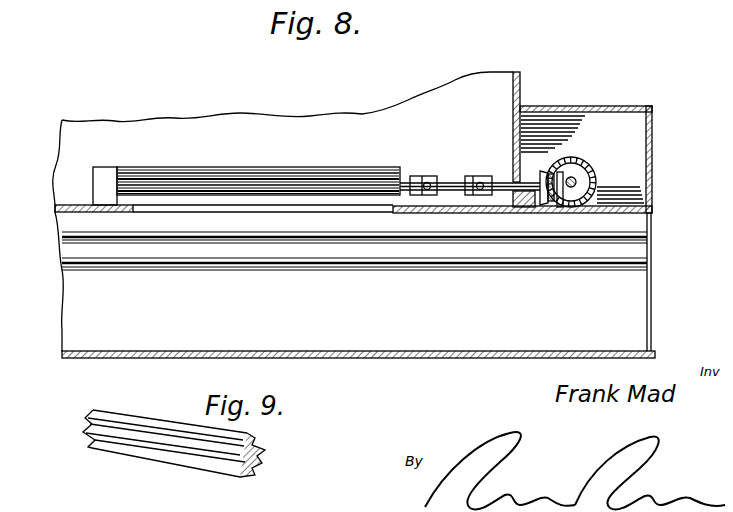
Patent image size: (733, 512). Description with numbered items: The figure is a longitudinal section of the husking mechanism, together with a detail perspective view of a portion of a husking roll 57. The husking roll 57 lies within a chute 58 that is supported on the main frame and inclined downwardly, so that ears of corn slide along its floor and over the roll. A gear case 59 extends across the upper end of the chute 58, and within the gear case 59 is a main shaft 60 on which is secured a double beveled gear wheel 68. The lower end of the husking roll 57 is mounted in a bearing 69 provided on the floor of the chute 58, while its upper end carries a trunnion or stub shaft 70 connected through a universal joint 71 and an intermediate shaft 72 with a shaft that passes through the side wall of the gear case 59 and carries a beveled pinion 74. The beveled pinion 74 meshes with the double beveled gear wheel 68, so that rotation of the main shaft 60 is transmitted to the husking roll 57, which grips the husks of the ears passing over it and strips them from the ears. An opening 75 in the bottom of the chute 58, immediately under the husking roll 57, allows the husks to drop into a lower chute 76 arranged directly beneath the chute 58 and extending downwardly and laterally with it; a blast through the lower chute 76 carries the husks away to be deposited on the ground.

In FIG. 8, the husking roll 57 is at (258, 169).
In FIG. 9, the husking roll 57 is at (174, 452).
In FIG. 8, the chute 58 is at (283, 212).
In FIG. 8, the gear case 59 is at (571, 122).
In FIG. 8, the main shaft 60 is at (575, 181).
In FIG. 8, the double beveled gear wheel 68 is at (597, 175).
In FIG. 8, the bearing 69 is at (104, 182).
In FIG. 8, the trunnion or stub shaft 70 is at (403, 185).
In FIG. 8, the universal joint 71 is at (472, 176).
In FIG. 8, the intermediate shaft 72 is at (453, 193).
In FIG. 8, the beveled pinion 74 is at (547, 197).
In FIG. 8, the opening 75 is at (305, 210).
In FIG. 8, the lower chute 76 is at (378, 345).